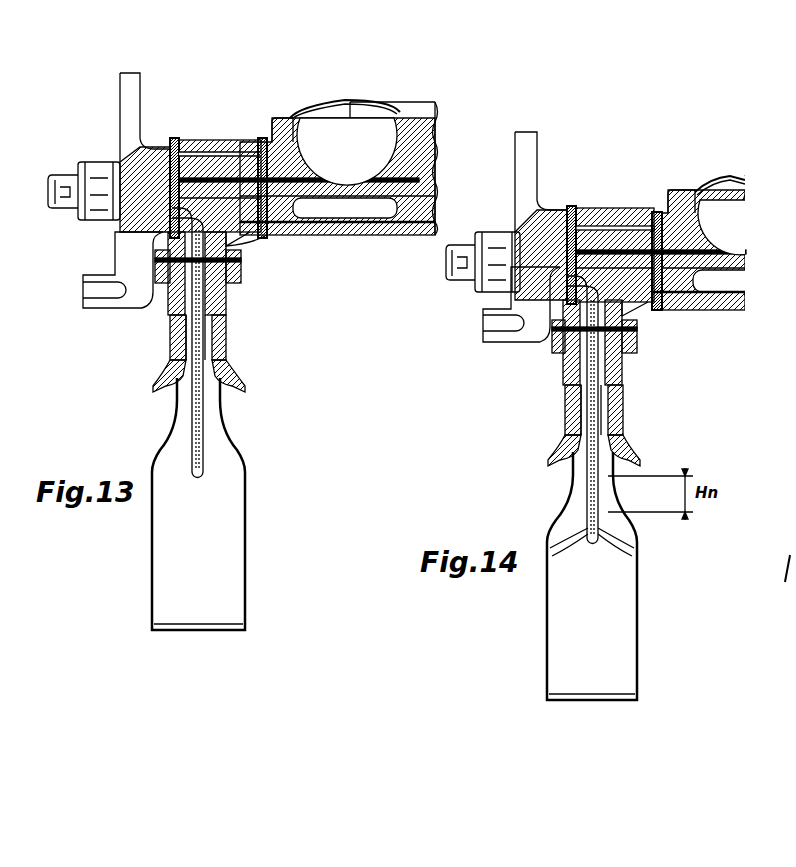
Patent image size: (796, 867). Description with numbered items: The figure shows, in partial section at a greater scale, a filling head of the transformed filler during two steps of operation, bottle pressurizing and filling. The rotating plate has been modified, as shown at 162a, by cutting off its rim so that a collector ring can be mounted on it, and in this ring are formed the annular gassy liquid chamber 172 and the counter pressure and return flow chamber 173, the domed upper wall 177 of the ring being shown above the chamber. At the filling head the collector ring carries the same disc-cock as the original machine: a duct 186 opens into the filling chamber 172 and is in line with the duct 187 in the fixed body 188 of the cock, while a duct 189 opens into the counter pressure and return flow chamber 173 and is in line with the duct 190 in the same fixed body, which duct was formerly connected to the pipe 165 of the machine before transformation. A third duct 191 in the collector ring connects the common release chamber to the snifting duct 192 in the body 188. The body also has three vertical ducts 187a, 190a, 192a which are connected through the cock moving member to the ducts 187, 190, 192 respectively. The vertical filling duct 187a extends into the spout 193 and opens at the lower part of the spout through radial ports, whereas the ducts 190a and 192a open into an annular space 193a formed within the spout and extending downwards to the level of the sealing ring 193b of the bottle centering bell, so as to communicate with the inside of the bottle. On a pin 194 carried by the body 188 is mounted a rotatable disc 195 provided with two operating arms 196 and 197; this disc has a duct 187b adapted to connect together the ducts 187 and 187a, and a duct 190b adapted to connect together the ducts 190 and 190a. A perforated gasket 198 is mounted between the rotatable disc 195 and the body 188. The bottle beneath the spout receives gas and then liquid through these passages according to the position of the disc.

In FIG. 13, the pipe 165 is at (248, 70).
In FIG. 13, the operating arm 196 is at (122, 98).
In FIG. 14, the operating arm 196 is at (521, 165).
In FIG. 13, the rotatable disc 195 is at (125, 222).
In FIG. 13, the pin 194 is at (68, 175).
In FIG. 14, the pin 194 is at (466, 247).
In FIG. 13, the operating arm 197 is at (108, 298).
In FIG. 14, the operating arm 197 is at (503, 338).
In FIG. 13, the fixed body 188 is at (255, 140).
In FIG. 13, the duct 190b is at (166, 145).
In FIG. 14, the duct 190b is at (553, 215).
In FIG. 13, the perforated gasket 198 is at (236, 140).
In FIG. 13, the gassy liquid chamber 172 is at (375, 128).
In FIG. 14, the gassy liquid chamber 172 is at (736, 200).
In FIG. 13, the duct 190 is at (290, 116).
In FIG. 13, the counter pressure and return flow chamber 173 is at (338, 102).
In FIG. 14, the counter pressure and return flow chamber 173 is at (684, 190).
In FIG. 13, the dome 177 is at (352, 104).
In FIG. 14, the dome 177 is at (731, 176).
In FIG. 13, the duct 189 is at (304, 150).
In FIG. 14, the duct 189 is at (698, 212).
In FIG. 13, the duct 186 is at (322, 182).
In FIG. 14, the duct 186 is at (733, 250).
In FIG. 13, the duct 191 is at (300, 208).
In FIG. 14, the duct 191 is at (690, 281).
In FIG. 13, the modified rotating plate 162a is at (372, 240).
In FIG. 14, the modified rotating plate 162a is at (738, 310).
In FIG. 13, the duct 187 is at (187, 343).
In FIG. 14, the duct 187 is at (612, 226).
In FIG. 13, the vertical filling duct 187a is at (232, 244).
In FIG. 14, the vertical filling duct 187a is at (628, 338).
In FIG. 14, the duct 187b is at (520, 286).
In FIG. 14, the snifting duct 192 is at (656, 225).
In FIG. 13, the vertical duct 192a is at (160, 290).
In FIG. 14, the vertical duct 192a is at (553, 332).
In FIG. 13, the vertical duct 190a is at (242, 262).
In FIG. 14, the vertical duct 190a is at (630, 322).
In FIG. 13, the spout 193 is at (210, 300).
In FIG. 14, the spout 193 is at (613, 380).
In FIG. 13, the annular space 193a is at (190, 335).
In FIG. 14, the annular space 193a is at (612, 405).
In FIG. 13, the sealing ring 193b is at (222, 343).